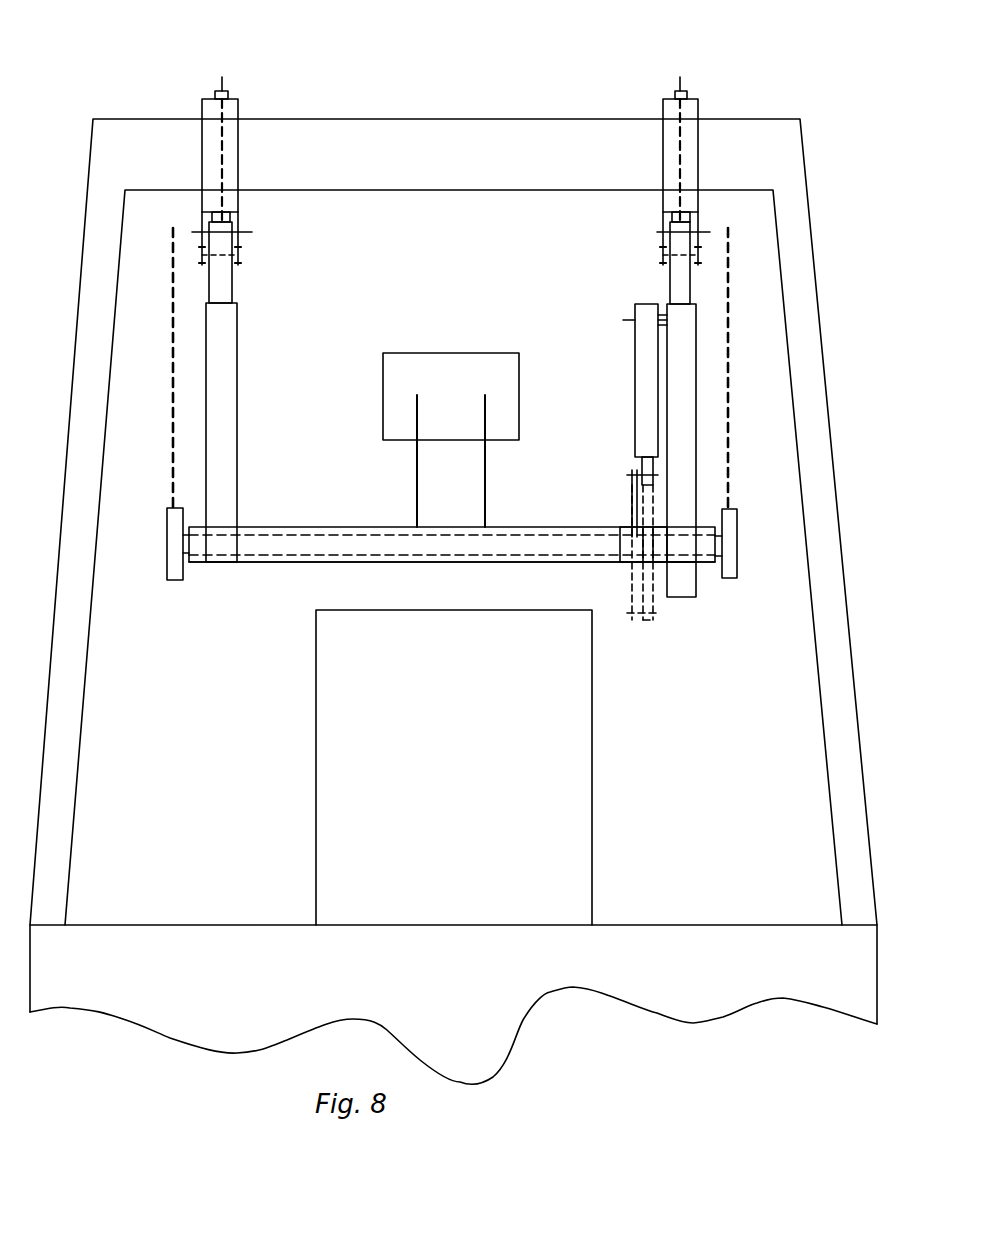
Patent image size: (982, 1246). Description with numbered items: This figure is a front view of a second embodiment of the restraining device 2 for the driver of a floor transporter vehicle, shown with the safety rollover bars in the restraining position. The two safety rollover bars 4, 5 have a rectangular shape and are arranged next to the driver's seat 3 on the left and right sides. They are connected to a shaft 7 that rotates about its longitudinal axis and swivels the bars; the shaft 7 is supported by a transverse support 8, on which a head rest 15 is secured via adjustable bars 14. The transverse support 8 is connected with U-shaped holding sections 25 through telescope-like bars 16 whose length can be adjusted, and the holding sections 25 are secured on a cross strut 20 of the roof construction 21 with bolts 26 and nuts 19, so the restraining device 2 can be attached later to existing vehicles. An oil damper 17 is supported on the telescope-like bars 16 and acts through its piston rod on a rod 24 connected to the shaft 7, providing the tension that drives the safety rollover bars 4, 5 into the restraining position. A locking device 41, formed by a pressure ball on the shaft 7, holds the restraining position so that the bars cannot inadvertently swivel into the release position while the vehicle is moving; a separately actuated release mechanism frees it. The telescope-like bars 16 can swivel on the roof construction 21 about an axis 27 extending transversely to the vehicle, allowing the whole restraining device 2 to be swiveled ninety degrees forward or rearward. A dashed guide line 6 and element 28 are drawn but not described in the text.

The restraining device 2 is at (167, 508).
The driver's seat 3 is at (592, 765).
The safety rollover bar 4 is at (166, 553).
The safety rollover bar 5 is at (737, 548).
The guide rod 6 is at (170, 387).
The shaft 7 is at (312, 527).
The transverse support 8 is at (277, 562).
The adjustable bars 14 is at (419, 453).
The head rest 15 is at (437, 353).
The telescope-like bars 16 is at (237, 345).
The oil damper 17 is at (637, 383).
The nuts 19 is at (215, 92).
The cross strut 20 is at (493, 119).
The roof construction 21 is at (134, 119).
The rod 24 is at (632, 500).
The U-shaped holding sections 25 is at (238, 153).
The bolts 26 is at (222, 77).
The axis 27 is at (248, 233).
The connecting piece 28 is at (223, 258).
The locking device 41 is at (705, 597).